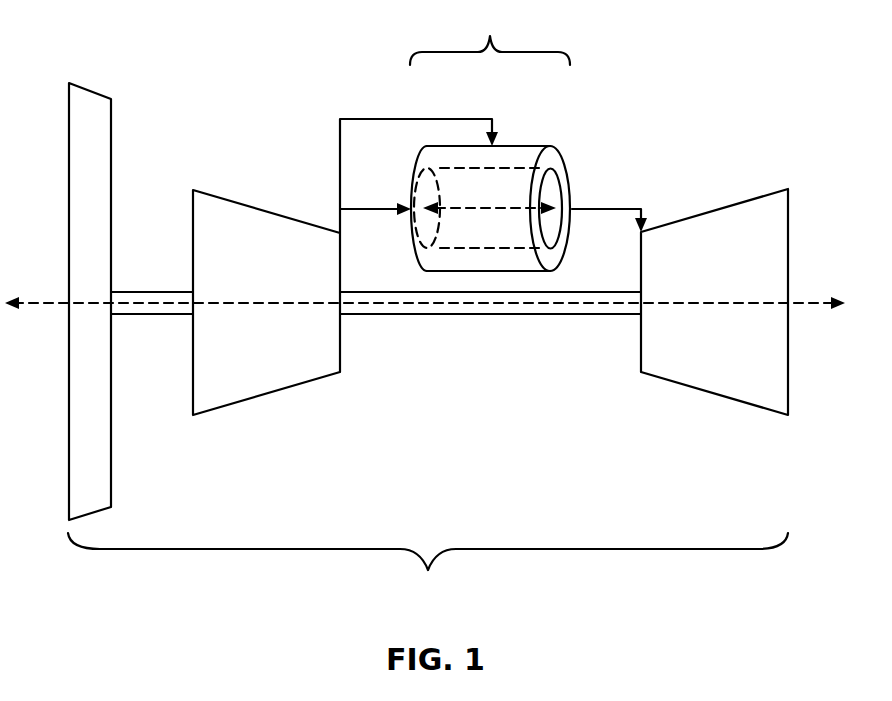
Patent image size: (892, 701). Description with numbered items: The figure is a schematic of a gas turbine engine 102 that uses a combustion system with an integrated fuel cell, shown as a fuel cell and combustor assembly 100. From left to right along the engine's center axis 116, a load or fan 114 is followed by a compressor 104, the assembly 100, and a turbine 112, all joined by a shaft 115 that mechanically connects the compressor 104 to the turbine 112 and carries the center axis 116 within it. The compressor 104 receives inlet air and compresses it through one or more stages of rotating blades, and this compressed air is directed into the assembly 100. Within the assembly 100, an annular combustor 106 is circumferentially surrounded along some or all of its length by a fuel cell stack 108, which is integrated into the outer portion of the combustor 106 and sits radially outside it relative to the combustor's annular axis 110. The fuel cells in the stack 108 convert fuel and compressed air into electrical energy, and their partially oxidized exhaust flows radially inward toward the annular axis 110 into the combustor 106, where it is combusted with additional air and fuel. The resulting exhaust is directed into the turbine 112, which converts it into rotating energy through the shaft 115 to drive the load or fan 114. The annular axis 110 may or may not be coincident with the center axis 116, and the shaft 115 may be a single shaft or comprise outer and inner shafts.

The fuel cell and combustor assembly 100 is at (493, 120).
The gas turbine engine 102 is at (428, 568).
The compressor 104 is at (268, 394).
The annular combustor 106 is at (498, 167).
The fuel cell stack 108 is at (500, 271).
The annular axis 110 is at (513, 207).
The turbine 112 is at (715, 394).
The load or fan 114 is at (91, 92).
The shaft 115 is at (418, 315).
The center axis 116 is at (800, 302).